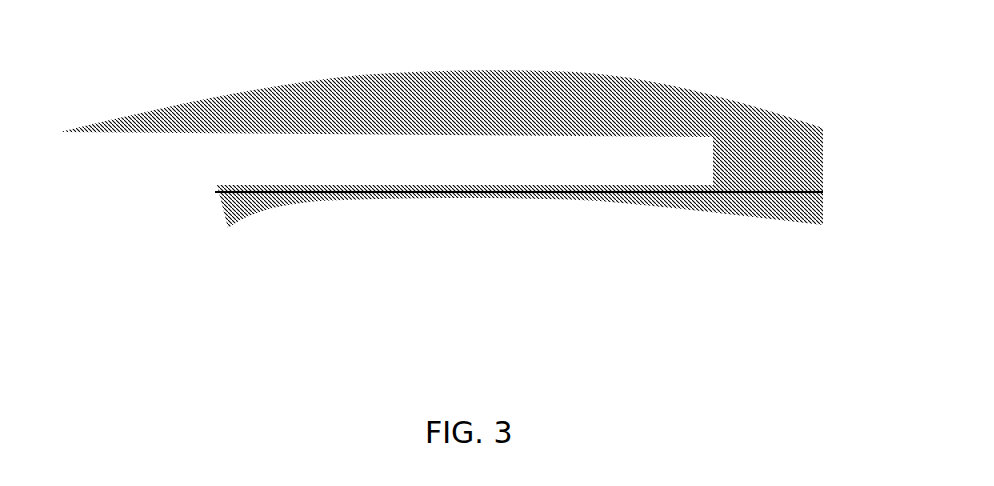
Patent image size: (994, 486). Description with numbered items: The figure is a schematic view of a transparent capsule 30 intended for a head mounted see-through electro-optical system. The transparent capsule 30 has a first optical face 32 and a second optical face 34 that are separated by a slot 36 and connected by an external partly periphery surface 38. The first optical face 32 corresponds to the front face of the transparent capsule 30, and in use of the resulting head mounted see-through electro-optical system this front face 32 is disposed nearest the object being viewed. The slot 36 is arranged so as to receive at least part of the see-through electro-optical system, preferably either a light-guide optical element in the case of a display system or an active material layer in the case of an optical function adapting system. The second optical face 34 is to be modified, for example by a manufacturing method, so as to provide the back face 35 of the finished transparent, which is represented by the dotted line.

The transparent capsule 30 is at (479, 156).
The first optical face 32 is at (575, 72).
The second optical face 34 is at (672, 207).
The back face 35 is at (770, 193).
The slot 36 is at (432, 165).
The external partly periphery surface 38 is at (823, 158).